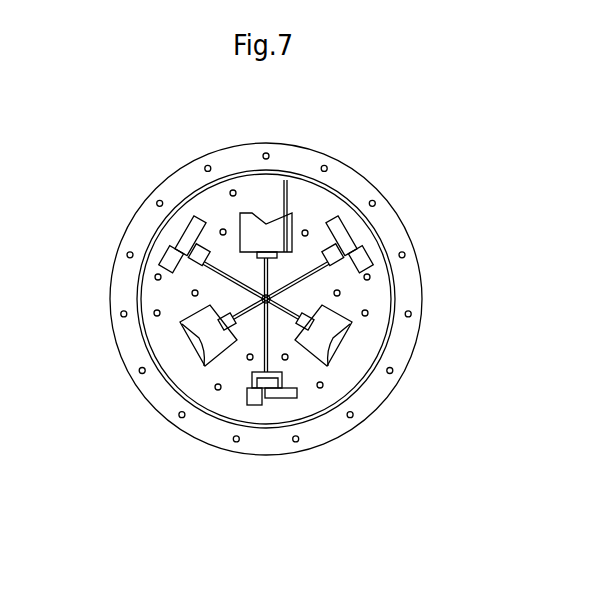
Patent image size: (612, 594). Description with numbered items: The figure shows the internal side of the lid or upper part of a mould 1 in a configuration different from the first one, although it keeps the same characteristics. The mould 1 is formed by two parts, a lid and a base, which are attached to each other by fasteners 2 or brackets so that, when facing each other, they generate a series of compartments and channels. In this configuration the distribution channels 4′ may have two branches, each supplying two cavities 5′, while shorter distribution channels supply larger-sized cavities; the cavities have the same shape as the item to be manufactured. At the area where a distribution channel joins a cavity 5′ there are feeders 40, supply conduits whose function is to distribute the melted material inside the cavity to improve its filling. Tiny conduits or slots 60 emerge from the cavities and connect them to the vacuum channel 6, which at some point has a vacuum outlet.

The mould 1 is at (227, 127).
The fasteners 2 is at (136, 375).
The distribution channels 4′ is at (321, 255).
The cavities 5′ is at (358, 250).
The vacuum channel 6 is at (345, 200).
The feeders 40 is at (217, 312).
The slots 60 is at (282, 188).